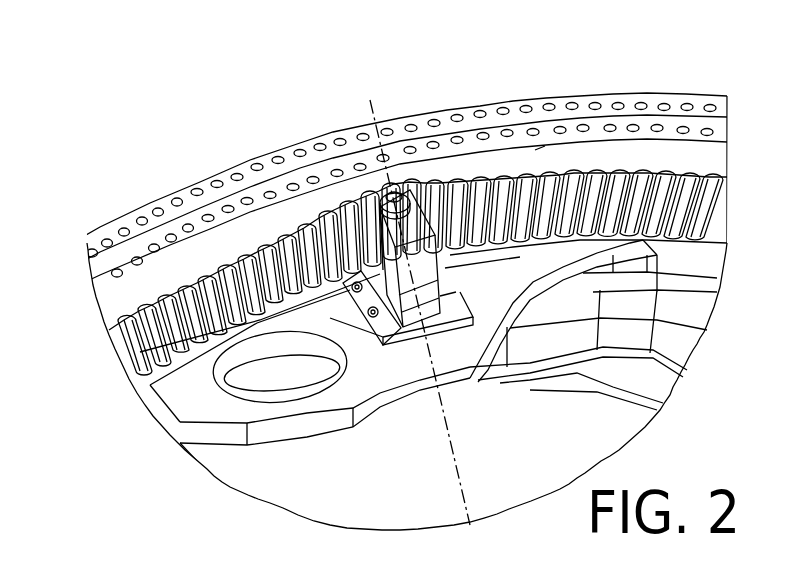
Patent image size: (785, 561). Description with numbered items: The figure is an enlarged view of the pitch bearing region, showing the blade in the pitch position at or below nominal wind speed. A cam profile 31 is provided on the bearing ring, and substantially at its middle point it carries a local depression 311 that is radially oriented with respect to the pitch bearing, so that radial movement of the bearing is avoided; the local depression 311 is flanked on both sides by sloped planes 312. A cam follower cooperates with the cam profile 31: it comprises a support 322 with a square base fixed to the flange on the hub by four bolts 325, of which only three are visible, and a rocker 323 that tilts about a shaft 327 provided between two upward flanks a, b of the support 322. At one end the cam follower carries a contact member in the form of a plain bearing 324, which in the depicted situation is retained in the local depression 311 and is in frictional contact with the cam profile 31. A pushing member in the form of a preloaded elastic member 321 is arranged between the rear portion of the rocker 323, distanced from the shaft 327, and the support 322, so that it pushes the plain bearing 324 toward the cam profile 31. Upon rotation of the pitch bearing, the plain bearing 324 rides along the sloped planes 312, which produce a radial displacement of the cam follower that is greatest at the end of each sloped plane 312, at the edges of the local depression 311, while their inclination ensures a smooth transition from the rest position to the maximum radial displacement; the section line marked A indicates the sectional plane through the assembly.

The cam profile 31 is at (400, 193).
The local depression 311 is at (393, 260).
The sloped planes 312 is at (373, 267).
The elastic member 321 is at (470, 376).
The support 322 is at (407, 345).
The rocker 323 is at (387, 247).
The plain bearing 324 is at (397, 193).
The bolts 325 is at (378, 282).
The shaft 327 is at (350, 285).
The upward flank a is at (443, 295).
The upward flank b is at (325, 398).
The section line A- A is at (437, 305).